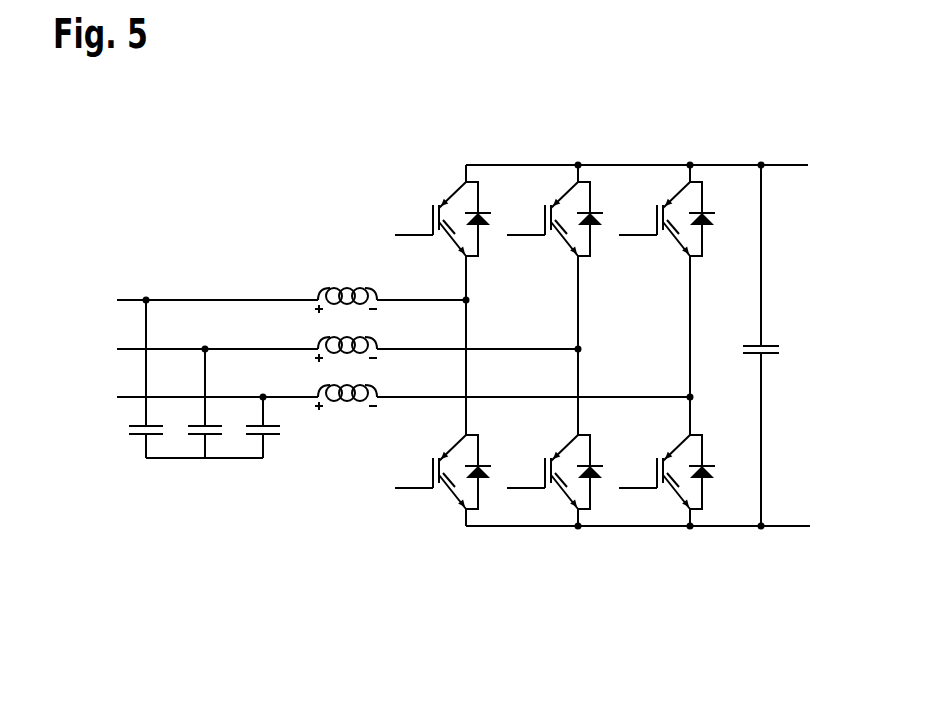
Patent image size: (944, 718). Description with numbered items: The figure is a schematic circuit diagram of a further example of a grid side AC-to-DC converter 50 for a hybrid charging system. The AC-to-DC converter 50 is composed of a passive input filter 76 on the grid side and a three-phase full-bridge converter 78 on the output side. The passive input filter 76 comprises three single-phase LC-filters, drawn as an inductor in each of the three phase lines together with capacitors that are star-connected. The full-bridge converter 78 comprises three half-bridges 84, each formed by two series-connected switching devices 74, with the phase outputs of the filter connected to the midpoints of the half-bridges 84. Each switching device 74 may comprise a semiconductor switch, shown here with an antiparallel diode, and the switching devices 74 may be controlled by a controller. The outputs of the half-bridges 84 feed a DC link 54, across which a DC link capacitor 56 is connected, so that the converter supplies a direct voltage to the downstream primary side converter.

The grid side AC-to-DC converter 50 is at (327, 210).
The DC link 54 is at (786, 148).
The DC link capacitor 56 is at (770, 354).
The switching device 74 is at (555, 343).
The passive input filter 76 is at (202, 545).
The three-phase full-bridge converter 78 is at (731, 546).
The half-bridge 84 is at (587, 566).